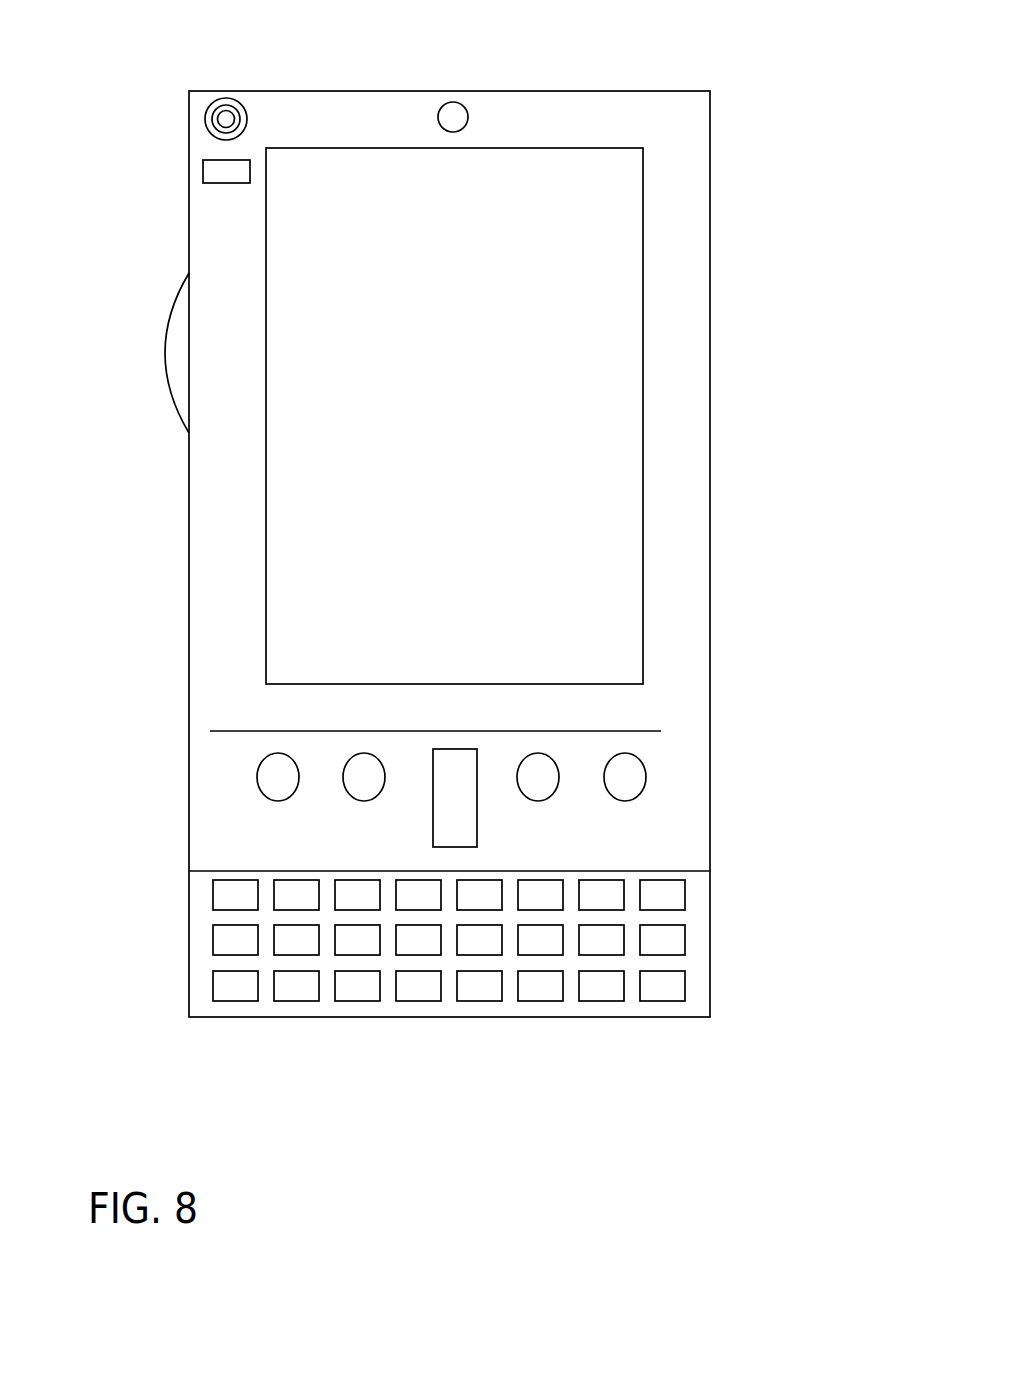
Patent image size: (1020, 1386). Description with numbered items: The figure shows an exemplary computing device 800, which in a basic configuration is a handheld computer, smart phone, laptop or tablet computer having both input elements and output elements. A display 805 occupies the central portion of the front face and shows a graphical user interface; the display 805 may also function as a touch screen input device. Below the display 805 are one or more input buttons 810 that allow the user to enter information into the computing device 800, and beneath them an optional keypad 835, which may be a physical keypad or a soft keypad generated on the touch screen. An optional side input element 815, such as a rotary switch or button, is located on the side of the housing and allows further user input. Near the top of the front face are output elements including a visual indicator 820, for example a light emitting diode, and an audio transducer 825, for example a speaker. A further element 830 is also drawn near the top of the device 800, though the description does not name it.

The computing device 800 is at (697, 110).
The display 805 is at (382, 593).
The input buttons 810 is at (453, 805).
The side input element 815 is at (178, 353).
The visual indicator 820 is at (203, 178).
The audio transducer 825 is at (203, 123).
The speaker 830 is at (467, 115).
The keypad 835 is at (198, 992).